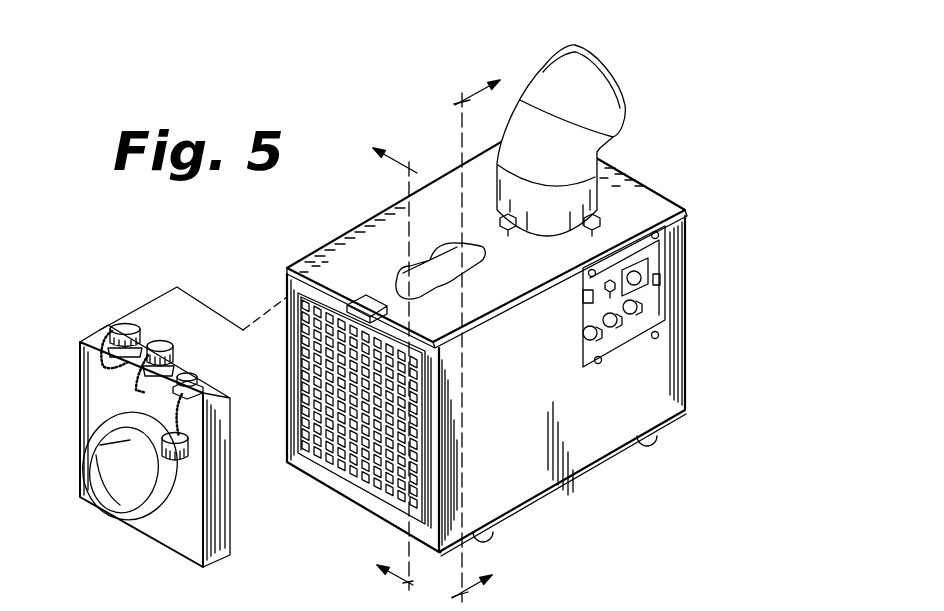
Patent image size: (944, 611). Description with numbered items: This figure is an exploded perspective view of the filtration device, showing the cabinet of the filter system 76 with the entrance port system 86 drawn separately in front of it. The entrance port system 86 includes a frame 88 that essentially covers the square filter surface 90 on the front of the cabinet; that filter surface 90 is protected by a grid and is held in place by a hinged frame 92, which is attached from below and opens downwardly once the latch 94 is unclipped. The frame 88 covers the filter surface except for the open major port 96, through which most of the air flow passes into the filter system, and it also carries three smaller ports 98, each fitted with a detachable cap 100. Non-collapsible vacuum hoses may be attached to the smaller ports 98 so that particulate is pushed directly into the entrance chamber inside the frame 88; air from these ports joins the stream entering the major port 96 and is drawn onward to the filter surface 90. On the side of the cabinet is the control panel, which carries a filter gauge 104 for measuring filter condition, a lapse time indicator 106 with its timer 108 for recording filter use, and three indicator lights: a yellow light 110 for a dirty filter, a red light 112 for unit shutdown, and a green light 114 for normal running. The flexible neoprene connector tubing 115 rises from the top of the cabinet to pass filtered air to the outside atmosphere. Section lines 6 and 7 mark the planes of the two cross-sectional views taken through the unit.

The filter system 76 is at (590, 425).
The filter surface 90 is at (314, 442).
The frame 92 is at (287, 291).
The latch 94 is at (361, 296).
The flexible neoprene connector tubing 115 is at (612, 109).
The filter gauge 104 is at (560, 282).
The lapse time indicator 106 is at (645, 266).
The timer 108 is at (661, 281).
The yellow light 110 is at (598, 340).
The red light 112 is at (621, 328).
The green light 114 is at (642, 306).
The entrance port system 86 is at (217, 506).
The frame 88 is at (160, 527).
The open major port 96 is at (102, 461).
The smaller ports 98 is at (127, 355).
The detachable cap 100 is at (159, 341).
The section line 6- 6 is at (388, 358).
The section line 7- 7 is at (484, 332).